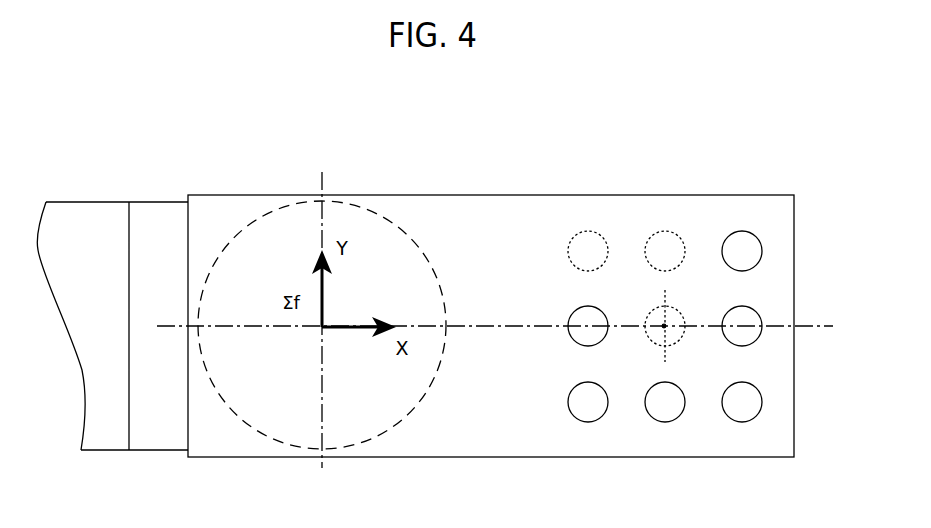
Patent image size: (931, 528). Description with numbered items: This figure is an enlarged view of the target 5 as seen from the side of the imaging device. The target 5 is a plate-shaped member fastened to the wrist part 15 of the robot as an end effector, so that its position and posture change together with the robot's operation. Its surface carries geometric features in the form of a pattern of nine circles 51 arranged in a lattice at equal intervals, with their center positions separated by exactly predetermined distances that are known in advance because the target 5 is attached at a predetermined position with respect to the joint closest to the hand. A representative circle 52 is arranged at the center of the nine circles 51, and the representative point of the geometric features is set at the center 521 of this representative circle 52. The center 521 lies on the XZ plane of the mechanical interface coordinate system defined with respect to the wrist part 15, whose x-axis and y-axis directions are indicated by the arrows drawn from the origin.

The target 5 is at (481, 195).
The wrist part 15 is at (405, 228).
The circles 51 is at (672, 232).
The representative circle 52 is at (677, 308).
The center of representative circle 521 is at (664, 326).